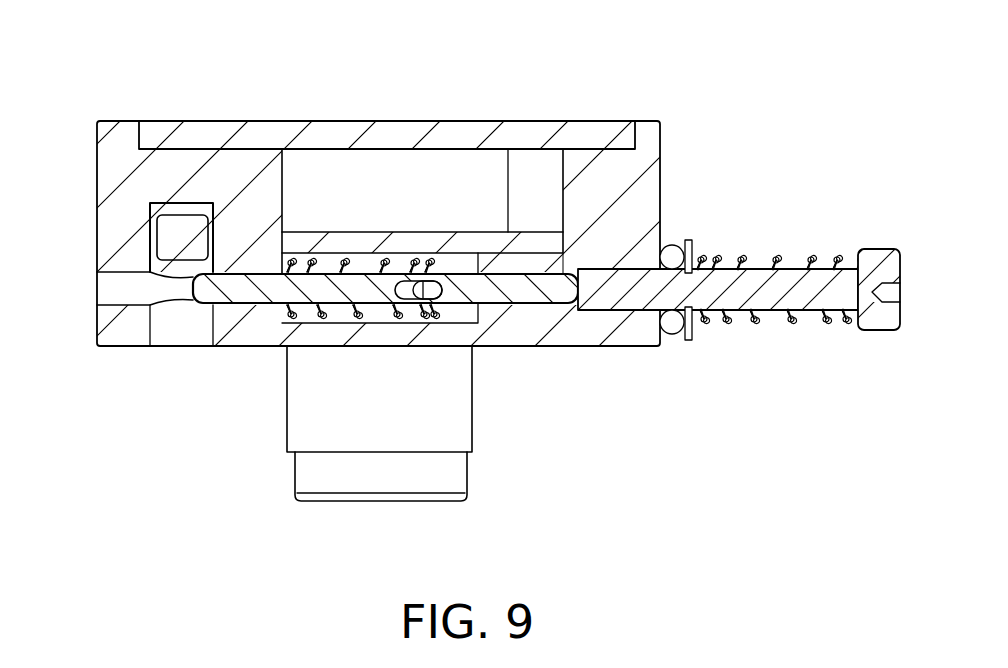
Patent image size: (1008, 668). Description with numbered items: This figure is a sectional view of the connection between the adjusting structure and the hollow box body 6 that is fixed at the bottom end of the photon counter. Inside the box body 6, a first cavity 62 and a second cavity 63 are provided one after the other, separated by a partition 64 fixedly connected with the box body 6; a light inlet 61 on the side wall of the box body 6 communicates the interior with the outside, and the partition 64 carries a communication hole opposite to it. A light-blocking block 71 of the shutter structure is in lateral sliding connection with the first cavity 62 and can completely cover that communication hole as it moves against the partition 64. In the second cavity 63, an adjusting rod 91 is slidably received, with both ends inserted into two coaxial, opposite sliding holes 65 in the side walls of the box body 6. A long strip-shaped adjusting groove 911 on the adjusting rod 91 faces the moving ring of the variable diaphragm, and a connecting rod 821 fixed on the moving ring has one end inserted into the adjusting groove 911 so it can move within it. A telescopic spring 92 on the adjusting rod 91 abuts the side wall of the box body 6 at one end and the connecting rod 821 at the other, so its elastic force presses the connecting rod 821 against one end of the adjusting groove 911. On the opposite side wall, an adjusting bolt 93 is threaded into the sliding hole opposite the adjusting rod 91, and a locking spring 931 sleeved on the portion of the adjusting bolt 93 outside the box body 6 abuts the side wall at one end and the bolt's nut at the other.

The box body 6 is at (118, 207).
The light inlet 61 is at (428, 430).
The first cavity 62 is at (318, 170).
The second cavity 63 is at (462, 263).
The partition 64 is at (545, 270).
The sliding holes 65 is at (130, 292).
The light-blocking block 71 is at (435, 170).
The adjusting rod 91 is at (233, 292).
The adjusting groove 911 is at (400, 290).
The telescopic spring 92 is at (285, 307).
The adjusting bolt 93 is at (776, 268).
The locking spring 931 is at (823, 318).
The connecting rod 821 is at (440, 300).